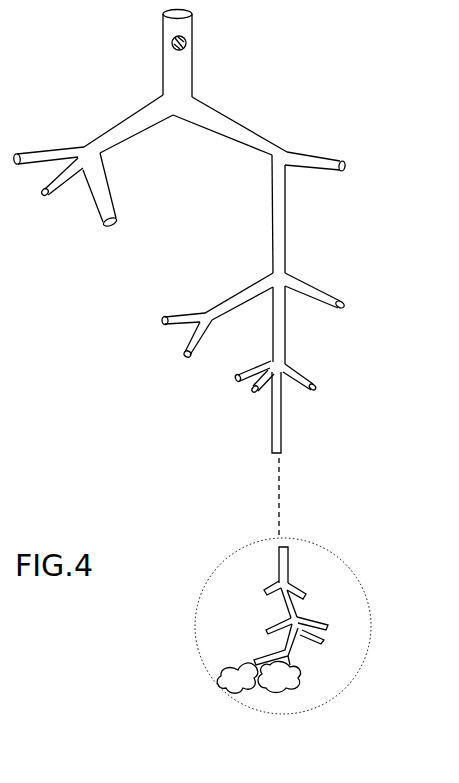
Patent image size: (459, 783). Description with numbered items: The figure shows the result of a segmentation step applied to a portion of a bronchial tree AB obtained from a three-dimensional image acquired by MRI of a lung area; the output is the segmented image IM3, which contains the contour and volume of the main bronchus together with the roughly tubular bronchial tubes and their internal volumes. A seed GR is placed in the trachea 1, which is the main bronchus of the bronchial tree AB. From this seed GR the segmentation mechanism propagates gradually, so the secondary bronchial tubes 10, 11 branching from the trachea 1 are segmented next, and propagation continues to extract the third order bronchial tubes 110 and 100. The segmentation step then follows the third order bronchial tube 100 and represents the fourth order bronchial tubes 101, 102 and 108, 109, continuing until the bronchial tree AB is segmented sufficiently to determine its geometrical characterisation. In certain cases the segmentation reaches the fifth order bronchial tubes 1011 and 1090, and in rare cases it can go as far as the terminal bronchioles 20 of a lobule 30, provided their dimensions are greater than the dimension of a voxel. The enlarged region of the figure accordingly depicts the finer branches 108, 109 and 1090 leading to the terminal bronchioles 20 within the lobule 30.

The trachea 1 is at (168, 75).
The seed GR is at (172, 43).
The segmented image IM3 is at (235, 35).
The bronchial tree AB is at (203, 92).
The secondary bronchial tube 11 is at (112, 133).
The 3rd order bronchial tube 110 is at (100, 214).
The secondary bronchial tube 10 is at (243, 128).
The 3rd order bronchial tube 100 is at (340, 157).
The 4th order bronchial tube 101 is at (235, 302).
The 5th order bronchial tube 1011 is at (184, 350).
The 4th order bronchial tube 102 is at (247, 402).
The lobule 30 is at (204, 675).
The 4th order bronchial tube 108 is at (268, 590).
The 4th order bronchial tube 109 is at (265, 628).
The 5th order bronchial tube 1090 is at (305, 647).
The terminal bronchiole 20 is at (288, 692).